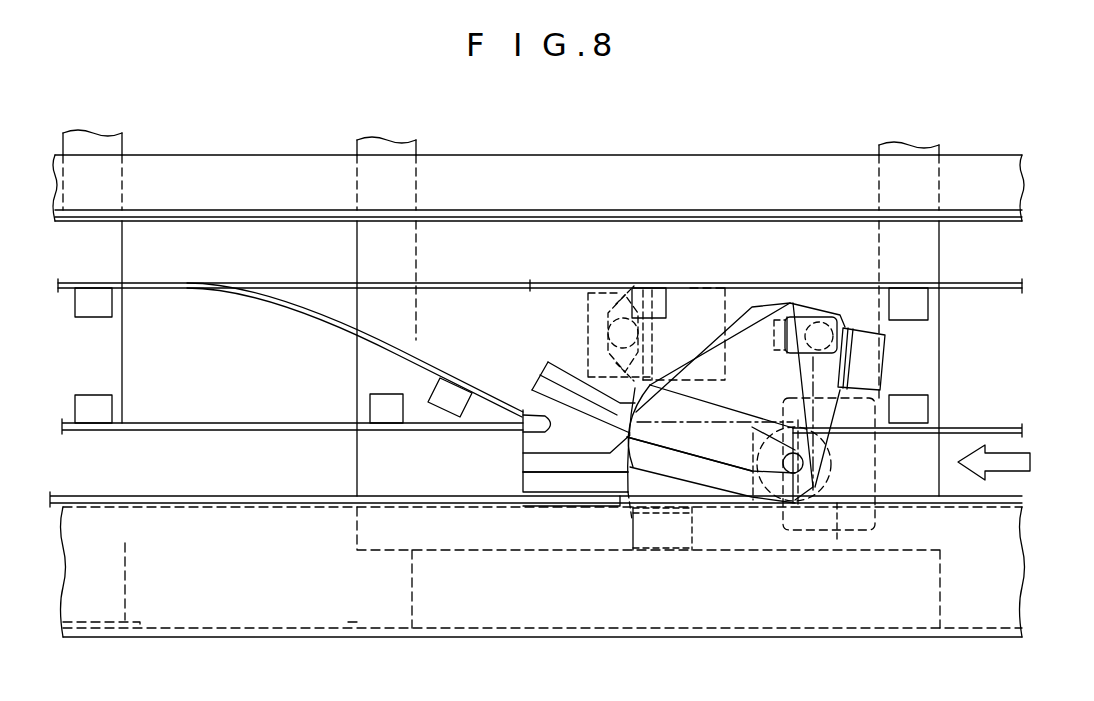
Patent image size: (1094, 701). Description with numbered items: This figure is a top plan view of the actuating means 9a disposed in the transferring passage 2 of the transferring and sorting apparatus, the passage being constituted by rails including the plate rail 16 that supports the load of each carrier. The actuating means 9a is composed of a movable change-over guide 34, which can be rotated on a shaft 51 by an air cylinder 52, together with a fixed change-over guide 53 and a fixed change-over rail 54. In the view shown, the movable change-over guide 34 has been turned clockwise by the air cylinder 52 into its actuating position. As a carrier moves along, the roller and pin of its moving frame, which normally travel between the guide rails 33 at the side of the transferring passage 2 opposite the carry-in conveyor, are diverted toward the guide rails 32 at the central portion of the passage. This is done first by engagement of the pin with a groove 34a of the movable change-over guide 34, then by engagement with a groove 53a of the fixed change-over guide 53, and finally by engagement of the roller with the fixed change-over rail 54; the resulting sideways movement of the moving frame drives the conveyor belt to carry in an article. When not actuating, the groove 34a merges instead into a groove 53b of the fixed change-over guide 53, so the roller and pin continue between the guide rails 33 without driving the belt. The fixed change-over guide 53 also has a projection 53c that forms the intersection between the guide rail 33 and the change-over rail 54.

The actuating means 9a is at (628, 154).
The guide rails 32 is at (79, 283).
The guide rails 33 is at (88, 496).
The plate rail 16 is at (251, 613).
The transferring passage 2 is at (123, 647).
The air cylinder 52 is at (717, 313).
The fixed change-over rail 54 is at (422, 358).
The fixed change-over guide 53 is at (572, 480).
The groove 53a is at (569, 391).
The groove 53b is at (535, 475).
The projection 53c is at (532, 428).
The movable change-over guide 34 is at (732, 488).
The groove 34a is at (717, 453).
The shaft 51 is at (818, 492).